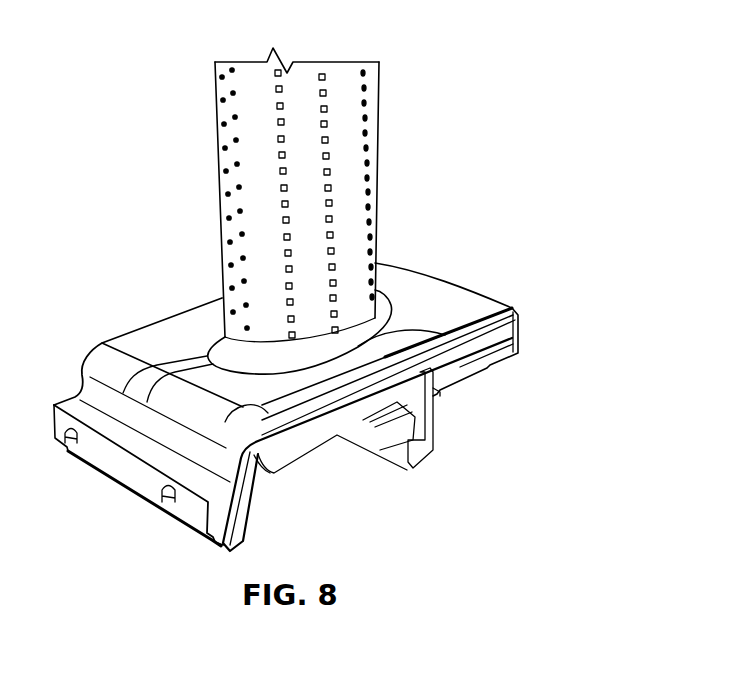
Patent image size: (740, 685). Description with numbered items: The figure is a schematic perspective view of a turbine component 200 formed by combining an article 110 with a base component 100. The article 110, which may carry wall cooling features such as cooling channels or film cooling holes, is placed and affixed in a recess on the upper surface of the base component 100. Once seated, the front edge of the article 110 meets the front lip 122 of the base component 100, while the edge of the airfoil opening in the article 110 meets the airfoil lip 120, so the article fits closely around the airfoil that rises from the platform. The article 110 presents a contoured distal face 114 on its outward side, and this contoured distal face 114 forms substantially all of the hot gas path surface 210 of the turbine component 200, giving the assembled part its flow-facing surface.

The base component 100 is at (517, 352).
The article 110 is at (477, 290).
The contoured distal face 114 is at (413, 293).
The airfoil lip 120 is at (434, 338).
The front lip 122 is at (280, 412).
The turbine component 200 is at (483, 98).
The hot gas path surface 210 is at (172, 330).